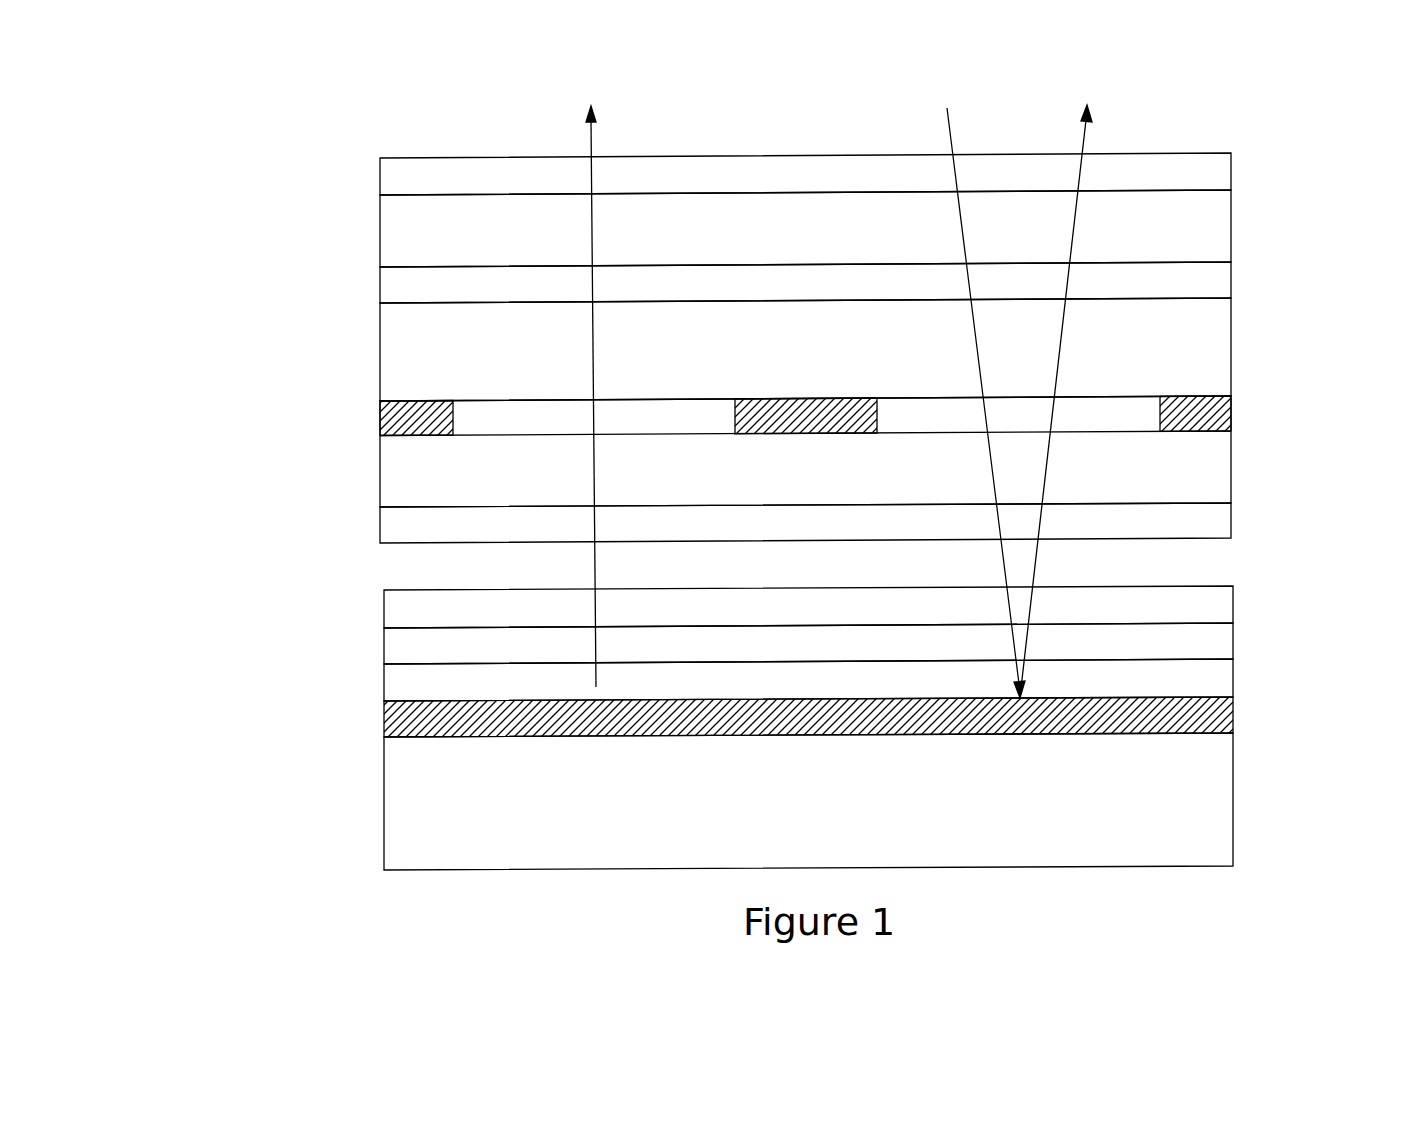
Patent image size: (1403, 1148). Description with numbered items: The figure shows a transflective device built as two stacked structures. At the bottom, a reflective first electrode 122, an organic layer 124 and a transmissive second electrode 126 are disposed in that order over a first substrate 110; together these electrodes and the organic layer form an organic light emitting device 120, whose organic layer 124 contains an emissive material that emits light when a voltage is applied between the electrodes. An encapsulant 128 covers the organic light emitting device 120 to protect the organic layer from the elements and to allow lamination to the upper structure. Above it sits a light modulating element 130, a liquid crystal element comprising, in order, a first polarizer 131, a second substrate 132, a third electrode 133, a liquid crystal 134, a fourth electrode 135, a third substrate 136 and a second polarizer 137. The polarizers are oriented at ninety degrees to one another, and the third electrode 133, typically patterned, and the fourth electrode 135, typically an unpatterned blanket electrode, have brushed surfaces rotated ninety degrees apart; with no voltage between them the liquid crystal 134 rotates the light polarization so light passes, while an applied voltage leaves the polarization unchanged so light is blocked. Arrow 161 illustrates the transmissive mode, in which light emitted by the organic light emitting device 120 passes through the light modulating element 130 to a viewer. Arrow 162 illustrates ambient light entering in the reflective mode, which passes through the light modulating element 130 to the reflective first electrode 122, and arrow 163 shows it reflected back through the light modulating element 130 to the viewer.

The first substrate 110 is at (384, 803).
The organic light emitting device 120 is at (384, 642).
The reflective first electrode 122 is at (1233, 715).
The organic layer 124 is at (1233, 678).
The transmissive second electrode 126 is at (1233, 641).
The encapsulant 128 is at (1233, 603).
The light modulating element 130 is at (380, 172).
The first polarizer 131 is at (1231, 519).
The second substrate 132 is at (1231, 465).
The third electrode 133 is at (1088, 432).
The liquid crystal 134 is at (1231, 346).
The fourth electrode 135 is at (1231, 280).
The third substrate 136 is at (1231, 225).
The second polarizer 137 is at (1231, 170).
The arrow illustrating the transmissive mode 161 is at (591, 145).
The arrow illustrating incident ambient light 162 is at (947, 132).
The arrow illustrating reflected light 163 is at (1087, 140).